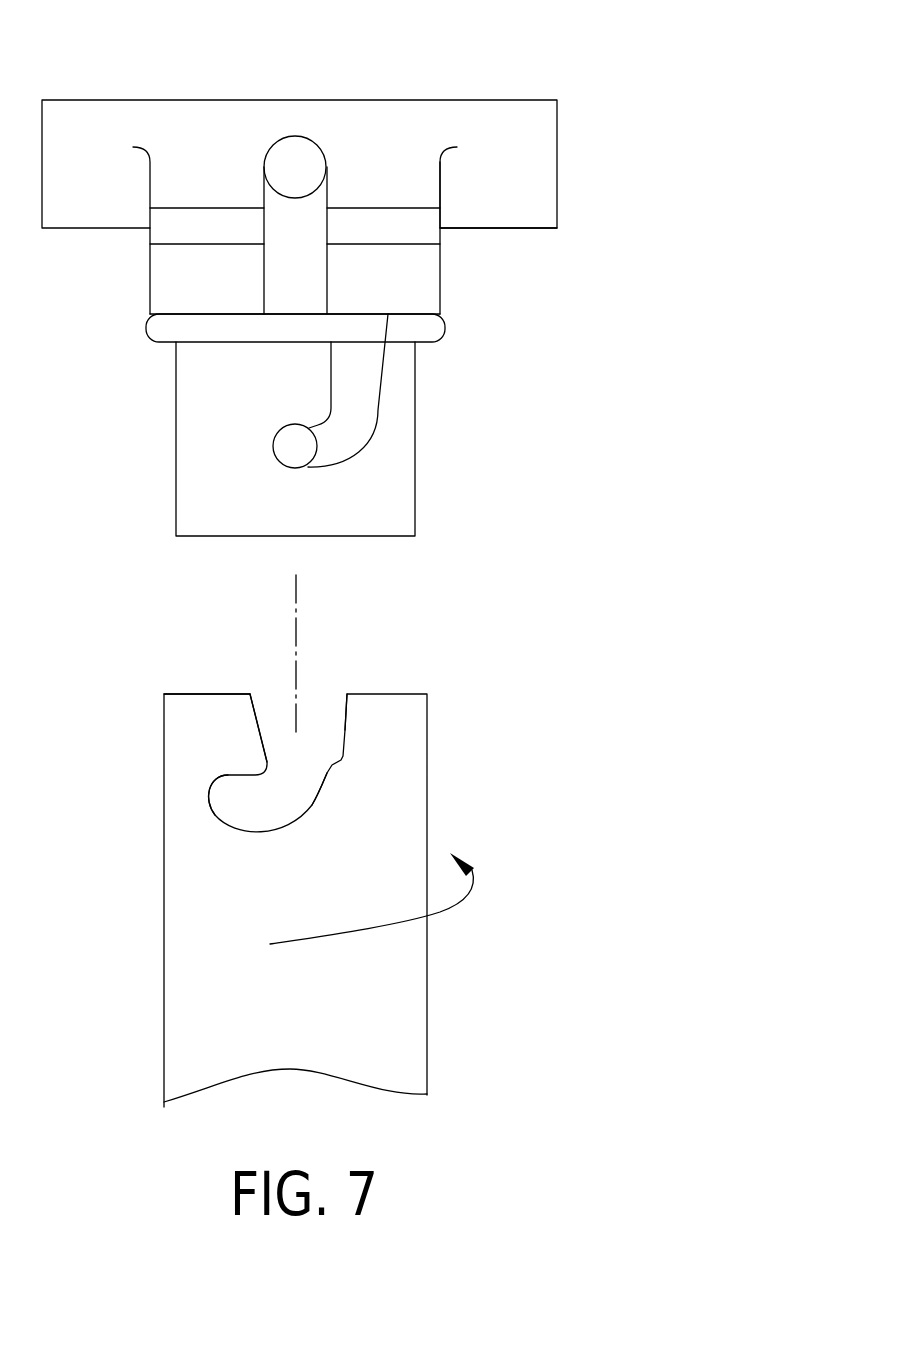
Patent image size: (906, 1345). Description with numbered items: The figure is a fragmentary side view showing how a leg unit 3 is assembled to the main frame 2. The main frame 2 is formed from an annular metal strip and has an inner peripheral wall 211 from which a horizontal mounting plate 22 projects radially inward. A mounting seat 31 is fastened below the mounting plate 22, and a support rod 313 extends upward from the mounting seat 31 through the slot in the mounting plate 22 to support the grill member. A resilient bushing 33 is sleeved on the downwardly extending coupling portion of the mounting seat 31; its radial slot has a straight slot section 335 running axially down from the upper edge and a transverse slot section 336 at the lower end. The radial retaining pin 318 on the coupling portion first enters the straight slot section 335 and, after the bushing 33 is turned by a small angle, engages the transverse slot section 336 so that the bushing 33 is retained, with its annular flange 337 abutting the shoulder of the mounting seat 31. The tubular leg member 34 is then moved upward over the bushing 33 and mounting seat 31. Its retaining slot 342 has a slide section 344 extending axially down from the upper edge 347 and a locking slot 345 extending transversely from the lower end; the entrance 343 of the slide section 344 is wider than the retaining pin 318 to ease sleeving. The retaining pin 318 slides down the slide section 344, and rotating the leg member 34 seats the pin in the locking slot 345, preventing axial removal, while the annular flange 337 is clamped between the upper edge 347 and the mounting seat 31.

The main frame 2 is at (440, 76).
The inner peripheral wall 211 is at (518, 200).
The mounting plate 22 is at (412, 177).
The mounting seat 31 is at (389, 275).
The support rod 313 is at (290, 155).
The annular flange 337 is at (423, 328).
The bushing 33 is at (415, 493).
The straight slot section 335 is at (331, 378).
The retaining pin 318 is at (294, 449).
The transverse slot section 336 is at (273, 443).
The leg unit 3 is at (485, 592).
The leg member 34 is at (415, 976).
The upper edge 347 is at (200, 694).
The entrance 343 is at (313, 710).
The slide section 344 is at (345, 730).
The retaining slot 342 is at (320, 800).
The locking slot 345 is at (213, 812).